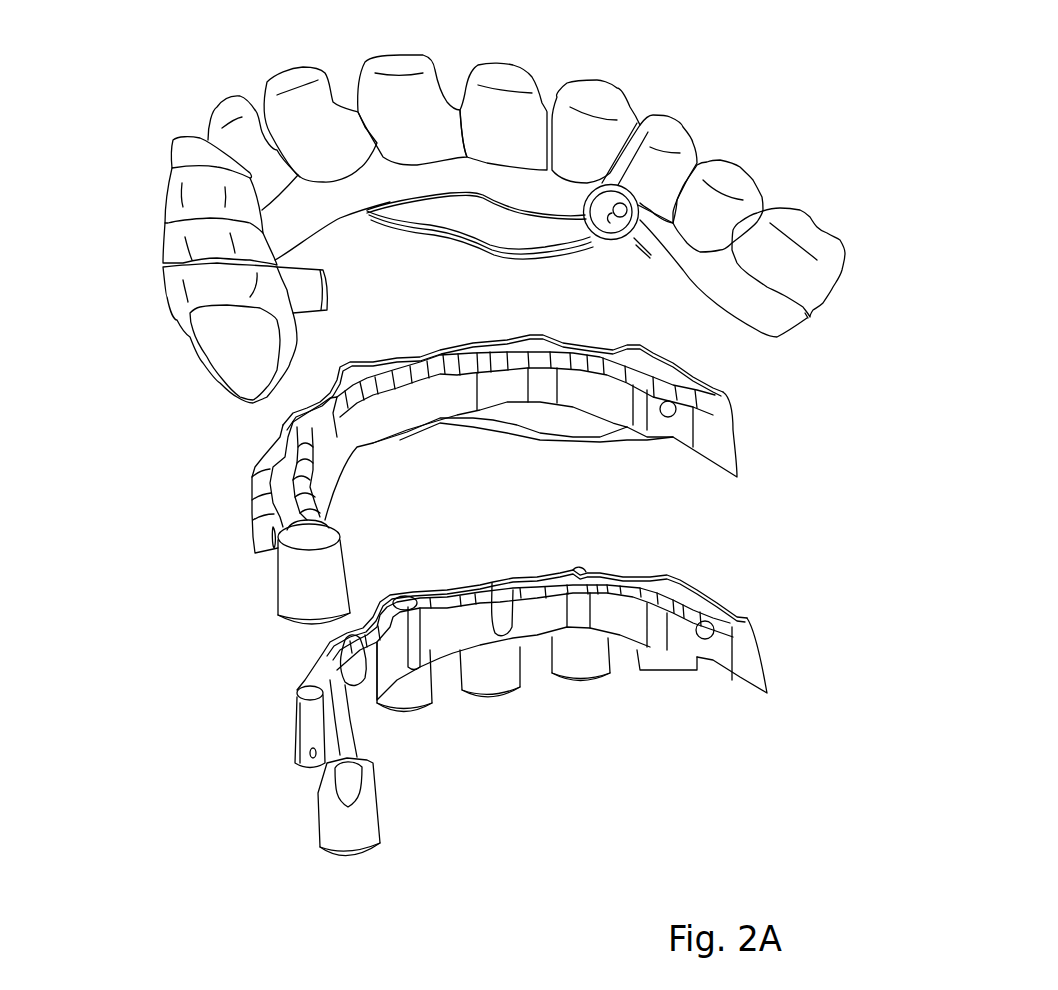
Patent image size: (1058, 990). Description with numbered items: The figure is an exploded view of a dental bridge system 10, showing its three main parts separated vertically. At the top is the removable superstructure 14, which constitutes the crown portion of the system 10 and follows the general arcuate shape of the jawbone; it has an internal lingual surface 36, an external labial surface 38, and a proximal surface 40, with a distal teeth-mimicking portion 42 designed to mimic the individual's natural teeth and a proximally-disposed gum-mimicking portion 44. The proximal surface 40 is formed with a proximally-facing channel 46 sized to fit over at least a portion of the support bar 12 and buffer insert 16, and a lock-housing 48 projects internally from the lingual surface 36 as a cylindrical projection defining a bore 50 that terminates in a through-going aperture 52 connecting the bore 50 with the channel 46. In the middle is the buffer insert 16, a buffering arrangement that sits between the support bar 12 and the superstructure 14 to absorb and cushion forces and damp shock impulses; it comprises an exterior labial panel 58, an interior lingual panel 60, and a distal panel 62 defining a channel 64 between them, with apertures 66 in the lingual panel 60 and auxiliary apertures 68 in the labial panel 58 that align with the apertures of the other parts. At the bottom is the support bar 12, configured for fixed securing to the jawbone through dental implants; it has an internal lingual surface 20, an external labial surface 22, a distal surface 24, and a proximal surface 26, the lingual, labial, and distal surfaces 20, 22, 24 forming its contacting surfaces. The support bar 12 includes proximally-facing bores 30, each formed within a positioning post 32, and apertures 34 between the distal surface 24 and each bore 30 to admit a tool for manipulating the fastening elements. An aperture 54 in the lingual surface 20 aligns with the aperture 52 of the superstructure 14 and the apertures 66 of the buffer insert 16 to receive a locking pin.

The dental bridge system 10 is at (783, 91).
The support bar 12 is at (752, 652).
The superstructure 14 is at (822, 247).
The buffer insert 16 is at (713, 438).
The lingual surface 20 is at (440, 640).
The labial surface 22 is at (327, 673).
The distal surface 24 is at (486, 598).
The proximal surface 26 is at (624, 650).
The bores 30 is at (493, 685).
The positioning post 32 is at (417, 713).
The apertures 34 is at (406, 597).
The lingual surface 36 is at (505, 180).
The labial surface 38 is at (178, 268).
The proximal surface 40 is at (462, 193).
The teeth-mimicking portion 42 is at (588, 95).
The gum-mimicking portion 44 is at (535, 190).
The channel 46 is at (433, 207).
The lock-housings 48 is at (622, 195).
The bore 50 is at (608, 226).
The aperture 52 is at (735, 195).
The aperture 54 is at (707, 623).
The labial panel 58 is at (263, 522).
The lingual panel 60 is at (357, 437).
The distal panel 62 is at (455, 353).
The channel 64 is at (635, 428).
The apertures 66 is at (672, 403).
The auxiliary apertures 68 is at (277, 540).